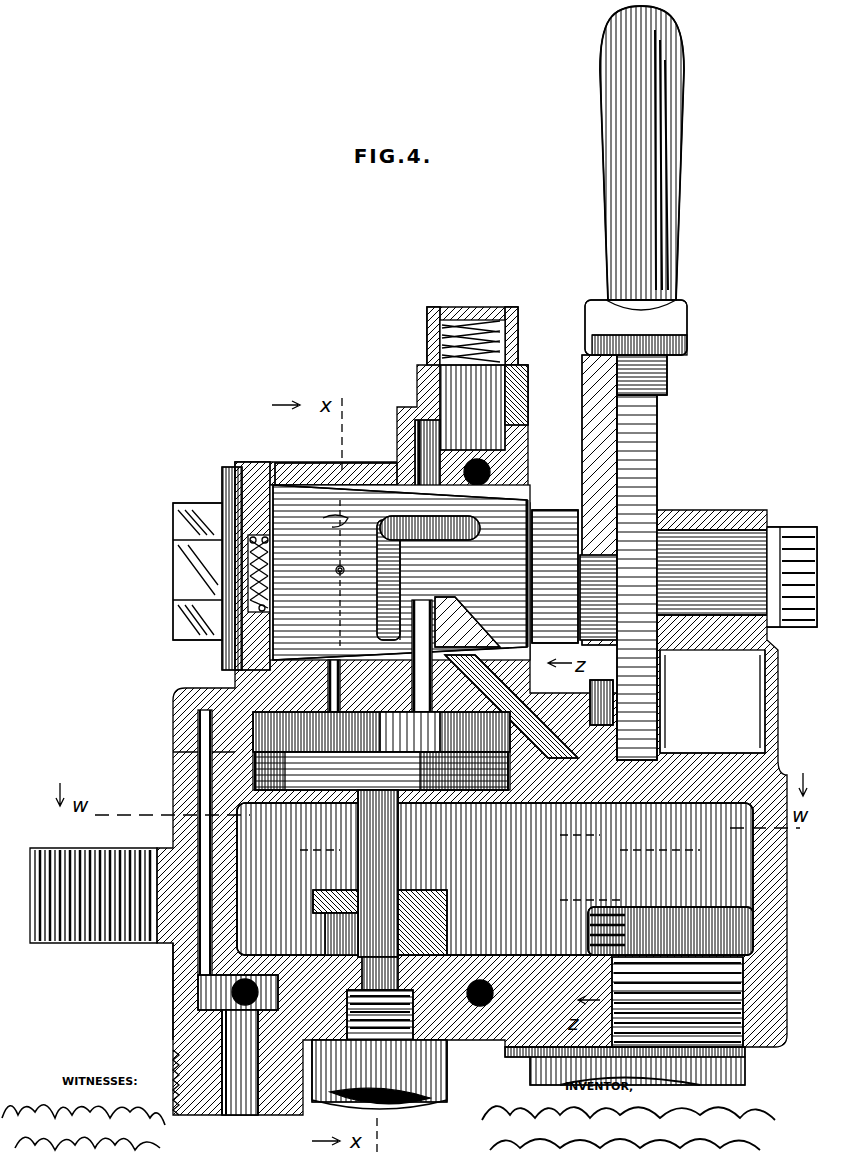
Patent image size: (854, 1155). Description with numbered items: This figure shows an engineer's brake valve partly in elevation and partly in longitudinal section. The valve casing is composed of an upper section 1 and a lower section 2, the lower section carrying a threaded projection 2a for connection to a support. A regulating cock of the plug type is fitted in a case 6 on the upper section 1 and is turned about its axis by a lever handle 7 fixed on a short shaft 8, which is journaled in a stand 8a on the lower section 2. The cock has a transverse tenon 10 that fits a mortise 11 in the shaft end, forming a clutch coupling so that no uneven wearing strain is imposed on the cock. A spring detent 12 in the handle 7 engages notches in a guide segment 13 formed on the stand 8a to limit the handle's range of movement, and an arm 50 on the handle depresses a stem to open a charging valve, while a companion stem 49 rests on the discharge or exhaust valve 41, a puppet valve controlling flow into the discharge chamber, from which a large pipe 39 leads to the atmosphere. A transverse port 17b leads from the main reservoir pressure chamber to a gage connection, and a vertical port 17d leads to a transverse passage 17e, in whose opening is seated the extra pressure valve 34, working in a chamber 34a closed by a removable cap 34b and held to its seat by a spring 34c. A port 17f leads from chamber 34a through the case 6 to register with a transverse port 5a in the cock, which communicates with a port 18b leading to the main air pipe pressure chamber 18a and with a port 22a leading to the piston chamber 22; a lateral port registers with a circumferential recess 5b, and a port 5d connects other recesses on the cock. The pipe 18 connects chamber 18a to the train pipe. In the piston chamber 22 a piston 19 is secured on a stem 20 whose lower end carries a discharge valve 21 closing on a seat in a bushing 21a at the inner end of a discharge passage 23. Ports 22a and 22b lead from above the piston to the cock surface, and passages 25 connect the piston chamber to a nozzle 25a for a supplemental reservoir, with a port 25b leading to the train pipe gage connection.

The upper section 1 is at (479, 711).
The lower section 2 is at (172, 978).
The threaded projection 2a is at (30, 858).
The transverse port 5a is at (467, 606).
The circumferential groove or recess 5b is at (465, 540).
The port 5d is at (317, 513).
The case 6 is at (276, 560).
The lever handle 7 is at (646, 180).
The short shaft 8 is at (737, 577).
The stand 8a is at (712, 701).
The transverse projection or tenon 10 is at (555, 576).
The transverse recess or mortise 11 is at (582, 520).
The spring stop or detent 12 is at (667, 380).
The guide segment 13 is at (658, 457).
The port or passage 17b is at (494, 993).
The vertical port or passage 17d is at (492, 470).
The transverse passage 17e is at (410, 462).
The port 17f is at (336, 481).
The pipe or passage 18 is at (745, 1062).
The main air pipe pressure chamber 18a is at (495, 879).
The port 18b is at (580, 784).
The movable abutment 19 is at (381, 771).
The stem 20 is at (372, 873).
The discharge valve 21 is at (405, 960).
The bushing 21a is at (313, 902).
The piston chamber 22 is at (381, 751).
The port 22a is at (393, 656).
The port 22b is at (304, 686).
The discharge passage 23 is at (358, 998).
The port or passage 25 is at (200, 788).
The nozzle or connection 25a is at (173, 1058).
The port or passage 25b is at (198, 998).
The extra pressure valve 34 is at (472, 385).
The chamber 34a is at (512, 428).
The removable cap 34b is at (430, 345).
The spring 34c is at (512, 350).
The pipe or passage 39 is at (379, 1074).
The discharge or exhaust valve 41 is at (650, 912).
The stem 49 is at (613, 700).
The arm 50 is at (598, 597).